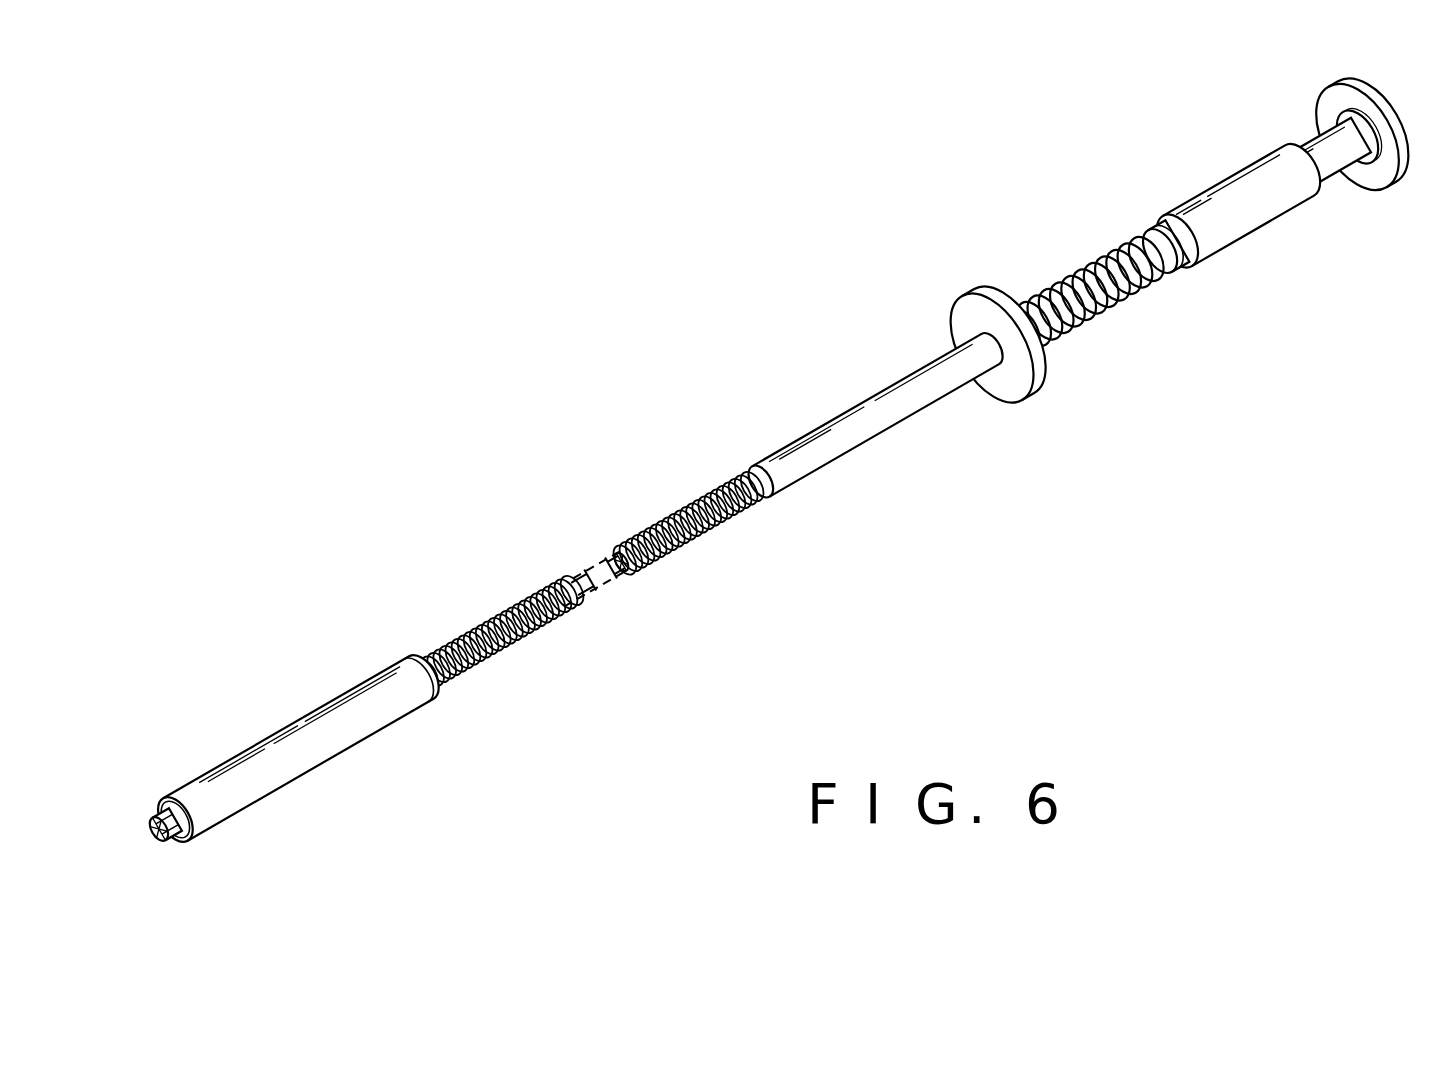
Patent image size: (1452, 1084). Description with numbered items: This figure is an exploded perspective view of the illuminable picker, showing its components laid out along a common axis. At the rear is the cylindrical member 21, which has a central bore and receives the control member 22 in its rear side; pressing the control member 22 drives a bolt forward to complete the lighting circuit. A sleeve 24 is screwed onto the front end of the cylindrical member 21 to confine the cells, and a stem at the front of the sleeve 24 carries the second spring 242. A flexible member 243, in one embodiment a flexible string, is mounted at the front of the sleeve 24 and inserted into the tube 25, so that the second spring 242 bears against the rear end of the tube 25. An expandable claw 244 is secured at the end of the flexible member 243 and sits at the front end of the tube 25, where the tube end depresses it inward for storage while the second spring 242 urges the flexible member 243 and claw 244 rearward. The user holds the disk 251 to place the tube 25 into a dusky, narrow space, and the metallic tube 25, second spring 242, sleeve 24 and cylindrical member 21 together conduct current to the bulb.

The cylindrical member 21 is at (1262, 222).
The control member 22 is at (1398, 185).
The sleeve 24 is at (1195, 262).
The second spring 242 is at (1098, 317).
The flexible member 243 is at (618, 578).
The expandable claw 244 is at (152, 824).
The tube 25 is at (675, 518).
The disk 251 is at (955, 320).